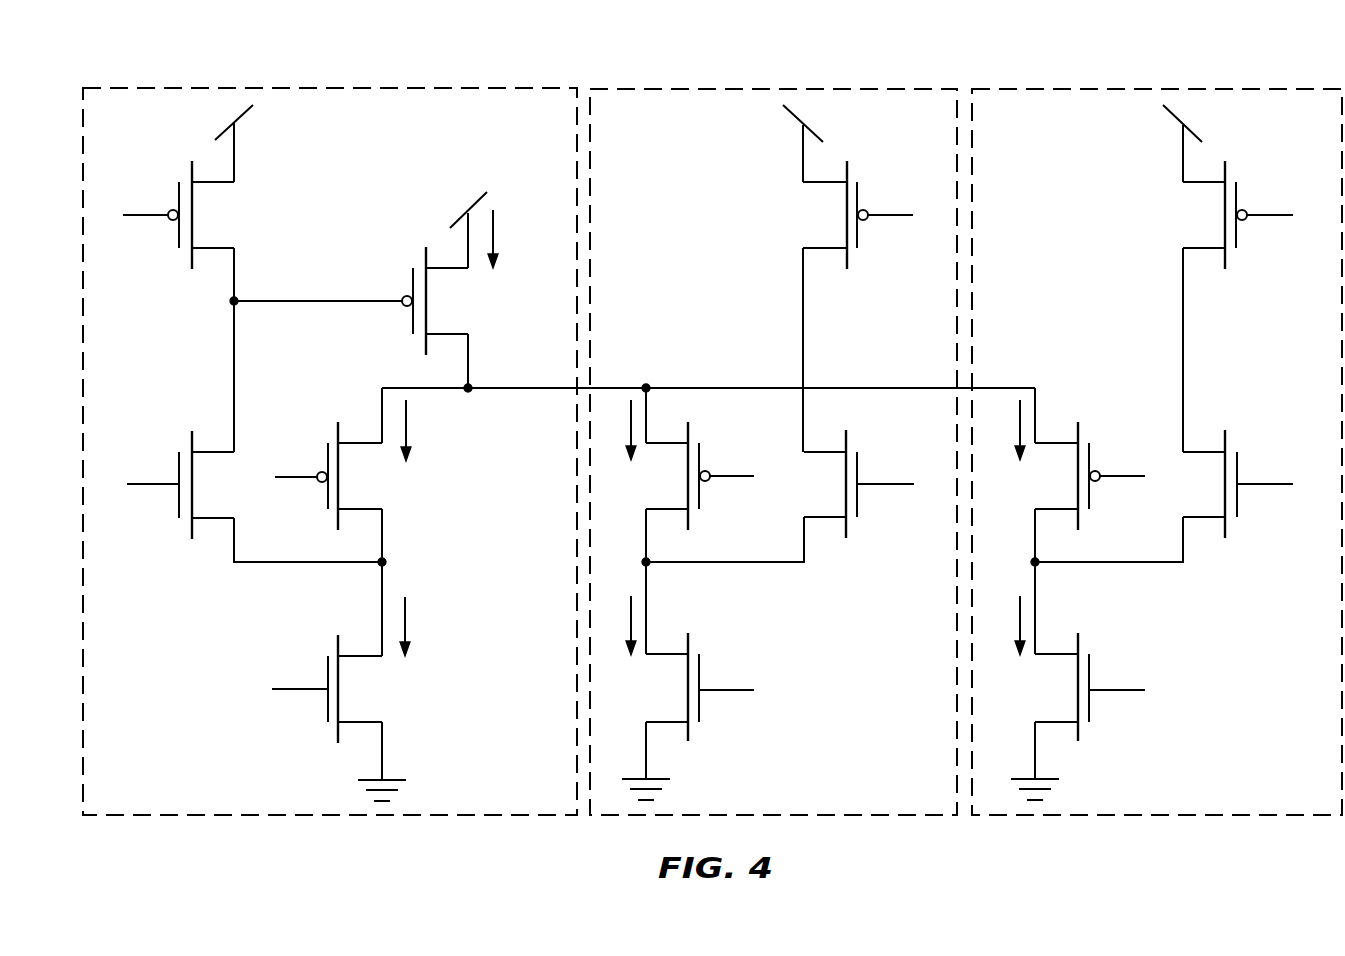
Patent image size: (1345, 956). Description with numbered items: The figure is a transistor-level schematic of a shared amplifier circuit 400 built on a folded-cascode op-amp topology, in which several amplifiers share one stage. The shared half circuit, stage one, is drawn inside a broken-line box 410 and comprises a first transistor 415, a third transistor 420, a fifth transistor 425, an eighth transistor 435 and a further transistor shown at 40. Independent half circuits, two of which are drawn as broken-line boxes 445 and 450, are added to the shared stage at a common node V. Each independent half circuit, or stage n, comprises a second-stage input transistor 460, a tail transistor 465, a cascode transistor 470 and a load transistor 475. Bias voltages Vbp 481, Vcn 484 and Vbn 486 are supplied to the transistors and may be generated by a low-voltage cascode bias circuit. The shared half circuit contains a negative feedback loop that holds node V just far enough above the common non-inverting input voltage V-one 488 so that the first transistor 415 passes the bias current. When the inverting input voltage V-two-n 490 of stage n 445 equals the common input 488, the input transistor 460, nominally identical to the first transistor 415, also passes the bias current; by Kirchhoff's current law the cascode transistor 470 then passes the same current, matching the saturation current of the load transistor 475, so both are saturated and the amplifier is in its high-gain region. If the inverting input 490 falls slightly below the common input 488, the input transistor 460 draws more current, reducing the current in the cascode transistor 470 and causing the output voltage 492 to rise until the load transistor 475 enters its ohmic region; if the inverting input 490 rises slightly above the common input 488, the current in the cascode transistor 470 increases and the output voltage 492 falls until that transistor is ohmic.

The shared amplifier circuit 400 is at (166, 24).
The stage 1 410 is at (343, 88).
The transistor M8 435 is at (178, 237).
The transistor M5 425 is at (412, 324).
The transistor M6 40 is at (178, 507).
The common non-inverting input voltage V1 488 is at (294, 474).
The transistor M1 415 is at (327, 498).
The transistor M3 420 is at (328, 712).
The stage n (independent half circuit) 445 is at (785, 89).
The transistor M9n 475 is at (860, 238).
The bias voltage Vbp 481 is at (893, 213).
The output voltage Voutn 492 is at (803, 350).
The transistor M2n 460 is at (703, 498).
The inverting input voltage V2n 490 is at (736, 472).
The transistor M7n 470 is at (859, 508).
The bias voltage Vcn 484 is at (893, 481).
The transistor M4n 465 is at (703, 709).
The bias voltage Vbn 486 is at (736, 687).
The independent half circuit 450 is at (1168, 89).